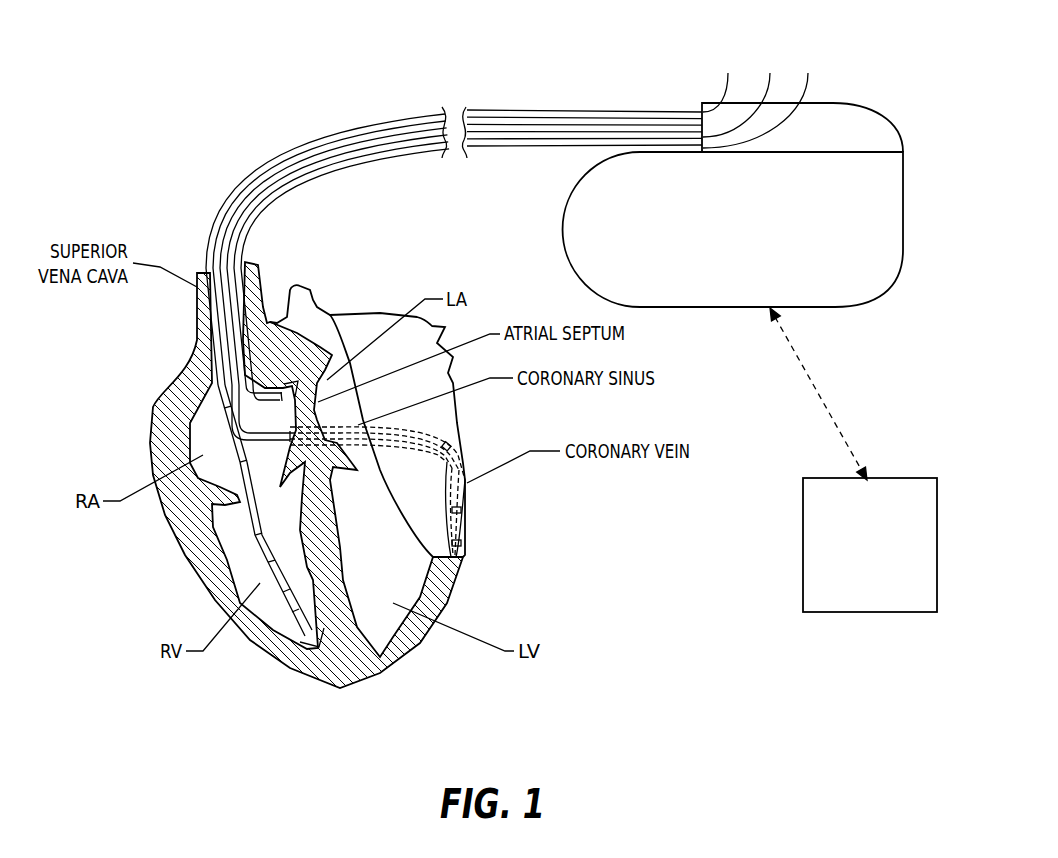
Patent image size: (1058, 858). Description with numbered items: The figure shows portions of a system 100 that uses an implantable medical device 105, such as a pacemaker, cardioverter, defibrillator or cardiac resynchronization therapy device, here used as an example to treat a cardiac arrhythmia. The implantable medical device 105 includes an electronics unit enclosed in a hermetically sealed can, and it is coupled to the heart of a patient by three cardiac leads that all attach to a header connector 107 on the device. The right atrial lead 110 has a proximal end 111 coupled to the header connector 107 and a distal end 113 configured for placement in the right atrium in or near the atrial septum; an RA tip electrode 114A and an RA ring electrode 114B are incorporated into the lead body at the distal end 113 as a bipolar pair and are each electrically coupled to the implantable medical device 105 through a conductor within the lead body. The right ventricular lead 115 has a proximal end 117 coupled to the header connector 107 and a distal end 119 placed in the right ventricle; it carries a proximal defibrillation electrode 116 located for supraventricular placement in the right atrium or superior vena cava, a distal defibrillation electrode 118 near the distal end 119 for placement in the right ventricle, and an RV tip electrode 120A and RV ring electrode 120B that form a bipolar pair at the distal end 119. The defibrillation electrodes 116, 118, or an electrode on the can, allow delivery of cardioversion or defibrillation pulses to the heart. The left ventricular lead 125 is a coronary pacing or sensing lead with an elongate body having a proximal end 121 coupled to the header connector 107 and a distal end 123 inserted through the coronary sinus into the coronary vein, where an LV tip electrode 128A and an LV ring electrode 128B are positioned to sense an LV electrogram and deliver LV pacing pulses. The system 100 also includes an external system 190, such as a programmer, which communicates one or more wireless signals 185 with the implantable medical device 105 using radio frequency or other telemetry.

The system 100 is at (122, 22).
The implantable medical device 105 is at (857, 303).
The header connector 107 is at (817, 102).
The right atrial lead 110 is at (487, 150).
The proximal end 111 is at (760, 100).
The distal end 113 is at (327, 325).
The RA tip electrode 114A is at (330, 316).
The RA ring electrode 114B is at (306, 288).
The right ventricular lead 115 is at (327, 185).
The proximal defibrillation electrode 116 is at (228, 410).
The proximal end 117 is at (720, 82).
The distal defibrillation electrode 118 is at (267, 497).
The distal end 119 is at (307, 648).
The RV tip electrode 120A is at (353, 687).
The RV ring electrode 120B is at (272, 660).
The proximal end 121 is at (740, 94).
The distal end 123 is at (384, 431).
The left ventricular lead 125 is at (313, 162).
The LV tip electrode 128A is at (463, 542).
The LV ring electrode 128B is at (463, 510).
The wireless signals 185 is at (836, 389).
The external system 190 is at (877, 613).